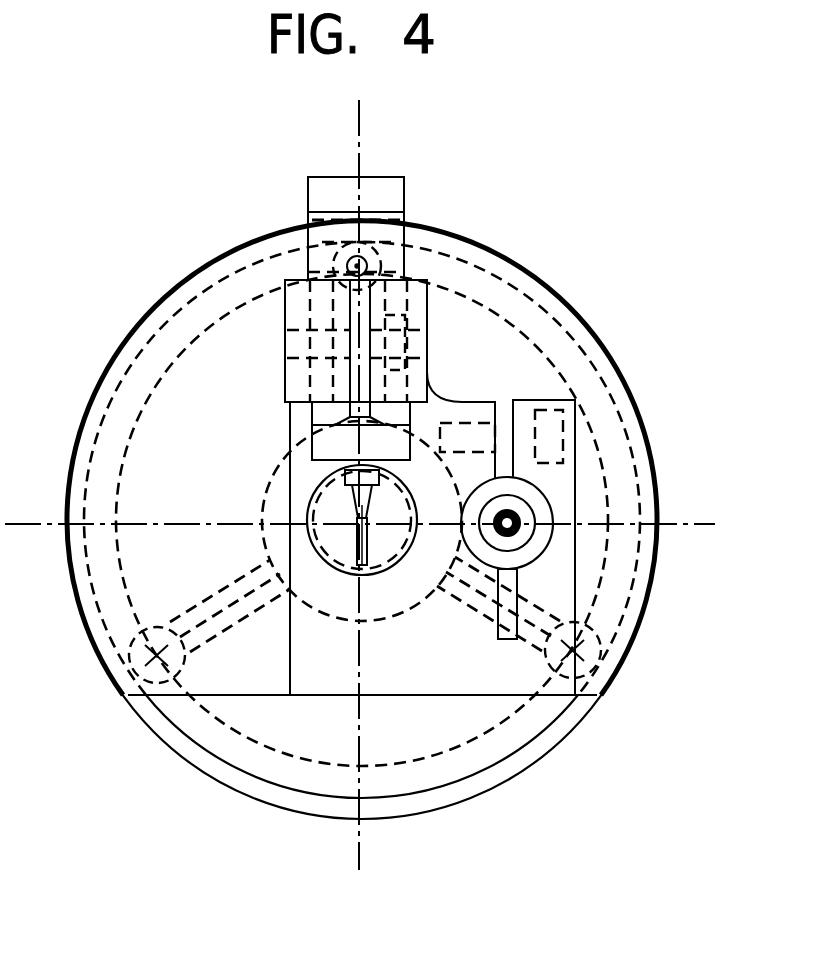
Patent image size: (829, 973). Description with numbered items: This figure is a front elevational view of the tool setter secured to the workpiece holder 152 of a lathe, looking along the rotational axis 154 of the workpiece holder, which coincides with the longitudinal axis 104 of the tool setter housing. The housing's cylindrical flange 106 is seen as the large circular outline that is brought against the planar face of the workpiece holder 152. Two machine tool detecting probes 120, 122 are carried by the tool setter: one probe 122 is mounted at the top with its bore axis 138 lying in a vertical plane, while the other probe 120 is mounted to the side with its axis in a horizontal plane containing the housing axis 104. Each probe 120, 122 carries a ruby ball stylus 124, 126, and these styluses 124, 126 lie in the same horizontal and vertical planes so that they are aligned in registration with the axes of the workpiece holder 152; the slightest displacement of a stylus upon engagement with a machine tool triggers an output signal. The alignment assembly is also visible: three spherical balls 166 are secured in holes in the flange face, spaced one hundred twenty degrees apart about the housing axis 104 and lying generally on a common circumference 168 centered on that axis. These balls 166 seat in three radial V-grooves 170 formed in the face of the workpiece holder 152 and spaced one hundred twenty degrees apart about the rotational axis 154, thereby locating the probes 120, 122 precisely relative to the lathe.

The longitudinal axis 104 is at (406, 566).
The cylindrical flange 106 is at (612, 376).
The machine tool detecting probe 120 is at (545, 522).
The machine tool detecting probe 122 is at (372, 178).
The ruby ball stylus 124 is at (512, 526).
The ruby ball stylus 126 is at (362, 520).
The longitudinal axis 138 is at (352, 129).
The workpiece holder 152 is at (548, 312).
The rotational axis 154 is at (372, 565).
The spherical ball 166 is at (375, 248).
The common circumference 168 is at (150, 388).
The radial V-groove 170 is at (400, 305).